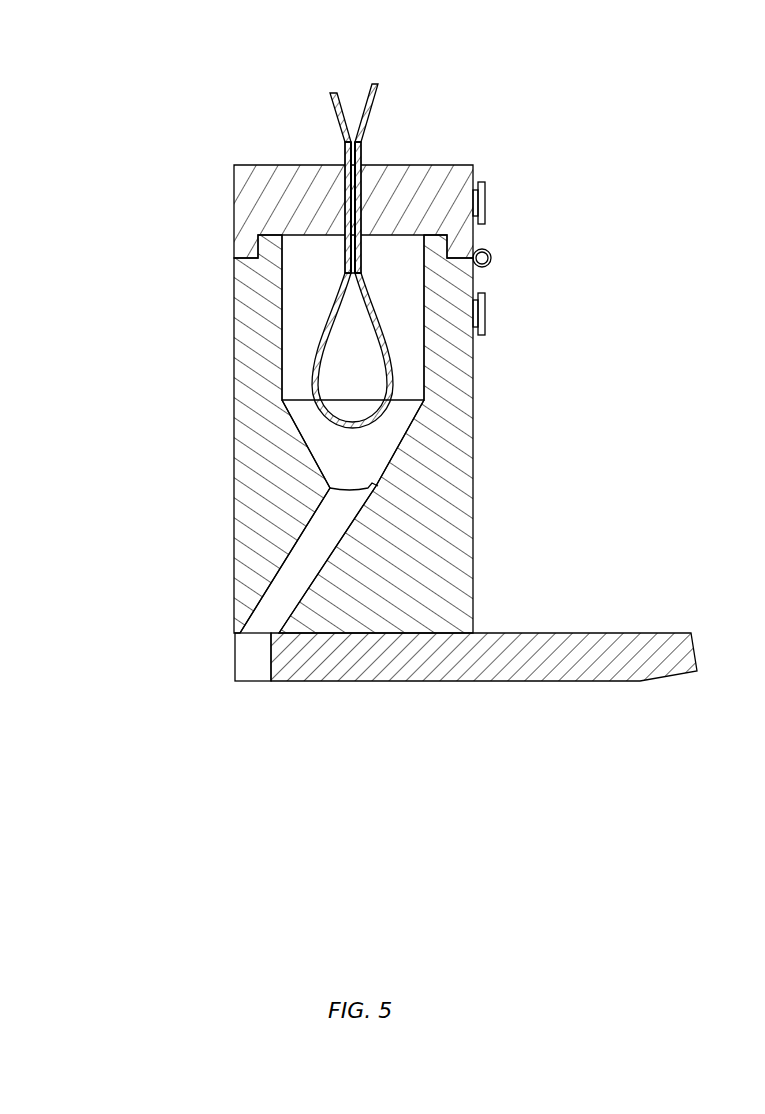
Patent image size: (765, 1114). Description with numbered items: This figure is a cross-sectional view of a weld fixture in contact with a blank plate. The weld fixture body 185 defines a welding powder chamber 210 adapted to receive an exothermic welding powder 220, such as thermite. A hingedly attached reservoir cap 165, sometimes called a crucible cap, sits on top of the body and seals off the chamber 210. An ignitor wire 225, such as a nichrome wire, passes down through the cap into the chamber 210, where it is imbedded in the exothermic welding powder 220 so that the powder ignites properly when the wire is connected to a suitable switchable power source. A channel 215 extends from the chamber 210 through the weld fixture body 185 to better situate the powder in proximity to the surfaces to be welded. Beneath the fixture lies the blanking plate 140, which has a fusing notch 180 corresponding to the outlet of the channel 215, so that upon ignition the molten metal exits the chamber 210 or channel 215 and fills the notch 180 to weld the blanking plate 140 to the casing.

The blanking plate 140 is at (429, 698).
The reservoir cap 165 is at (215, 189).
The fusing notch 180 is at (226, 680).
The weld fixture body 185 is at (208, 427).
The welding powder chamber 210 is at (413, 337).
The channel 215 is at (252, 568).
The exothermic welding powder 220 is at (290, 319).
The ignitor wire 225 is at (387, 103).